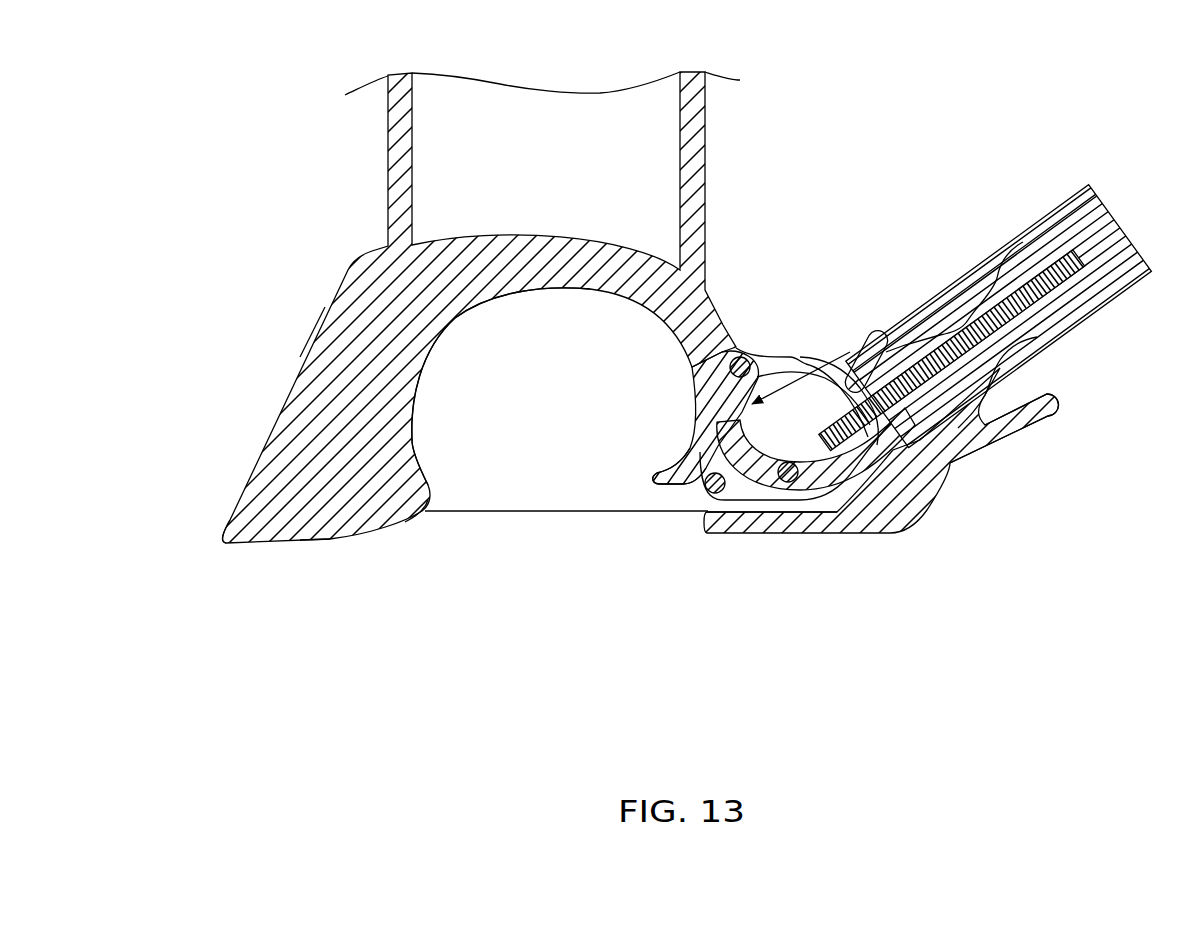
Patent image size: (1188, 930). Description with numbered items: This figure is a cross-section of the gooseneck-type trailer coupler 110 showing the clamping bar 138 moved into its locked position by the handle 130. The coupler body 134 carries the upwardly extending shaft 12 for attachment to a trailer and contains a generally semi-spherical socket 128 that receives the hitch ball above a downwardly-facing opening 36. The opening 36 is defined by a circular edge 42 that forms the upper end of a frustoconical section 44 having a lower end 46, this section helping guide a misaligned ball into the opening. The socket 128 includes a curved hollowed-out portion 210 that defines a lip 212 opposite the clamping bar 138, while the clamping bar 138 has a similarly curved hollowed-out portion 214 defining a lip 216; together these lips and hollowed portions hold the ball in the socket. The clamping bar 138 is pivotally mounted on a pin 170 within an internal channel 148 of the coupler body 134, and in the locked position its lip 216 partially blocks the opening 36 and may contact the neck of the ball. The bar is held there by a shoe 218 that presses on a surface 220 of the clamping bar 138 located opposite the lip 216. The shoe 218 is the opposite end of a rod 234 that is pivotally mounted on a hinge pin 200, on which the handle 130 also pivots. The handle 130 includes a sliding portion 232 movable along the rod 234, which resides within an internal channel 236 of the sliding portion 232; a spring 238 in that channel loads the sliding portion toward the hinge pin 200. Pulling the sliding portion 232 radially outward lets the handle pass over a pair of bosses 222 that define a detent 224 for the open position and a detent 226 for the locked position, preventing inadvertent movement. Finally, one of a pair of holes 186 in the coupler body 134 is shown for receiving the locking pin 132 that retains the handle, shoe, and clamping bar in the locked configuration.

The shaft 12 is at (388, 139).
The opening 36 is at (568, 585).
The circular edge 42 is at (430, 517).
The frustoconical section 44 is at (343, 537).
The lower end 46 is at (227, 543).
The trailer coupler 110 is at (347, 273).
The socket 128 is at (603, 312).
The handle 130 is at (1088, 183).
The locking pin 132 is at (727, 532).
The coupler body 134 is at (323, 300).
The clamping bar 138 is at (673, 488).
The internal channel 148 is at (797, 360).
The pin 170 is at (745, 357).
The holes 186 is at (698, 493).
The hinge pin 200 is at (804, 533).
The hollowed-out portion 210 is at (417, 390).
The lip 212 is at (428, 475).
The hollowed-out portion 214 is at (690, 393).
The lip 216 is at (657, 478).
The shoe 218 is at (793, 482).
The surface 220 is at (730, 430).
The bosses 222 is at (875, 343).
The detent 224 is at (770, 356).
The detent 226 is at (893, 453).
The sliding portion 232 is at (1023, 242).
The rod 234 is at (1035, 338).
The internal channel 236 is at (963, 328).
The spring 238 is at (1067, 297).